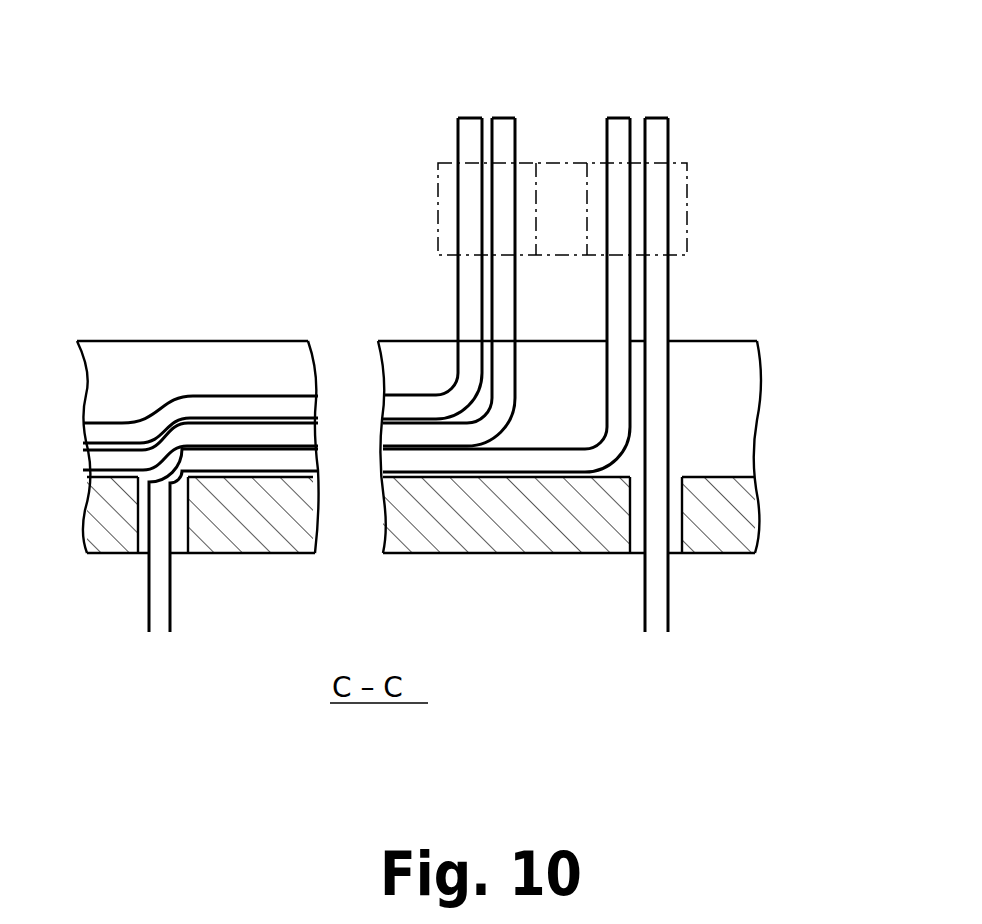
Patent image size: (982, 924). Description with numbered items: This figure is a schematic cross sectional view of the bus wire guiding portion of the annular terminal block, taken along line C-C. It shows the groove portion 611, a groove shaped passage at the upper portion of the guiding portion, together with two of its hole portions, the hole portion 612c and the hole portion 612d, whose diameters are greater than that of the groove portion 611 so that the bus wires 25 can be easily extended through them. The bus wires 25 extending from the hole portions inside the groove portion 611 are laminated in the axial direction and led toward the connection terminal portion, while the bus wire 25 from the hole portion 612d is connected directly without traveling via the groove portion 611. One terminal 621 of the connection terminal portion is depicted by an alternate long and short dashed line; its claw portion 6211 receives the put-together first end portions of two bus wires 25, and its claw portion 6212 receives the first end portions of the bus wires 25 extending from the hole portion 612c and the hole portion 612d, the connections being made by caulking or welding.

The bus wire 25 is at (472, 118).
The groove portion 611 is at (402, 367).
The hole portion 612c is at (147, 473).
The hole portion 612d is at (678, 473).
The terminal 621 is at (700, 217).
The claw portion 6211 is at (438, 178).
The claw portion 6212 is at (688, 182).